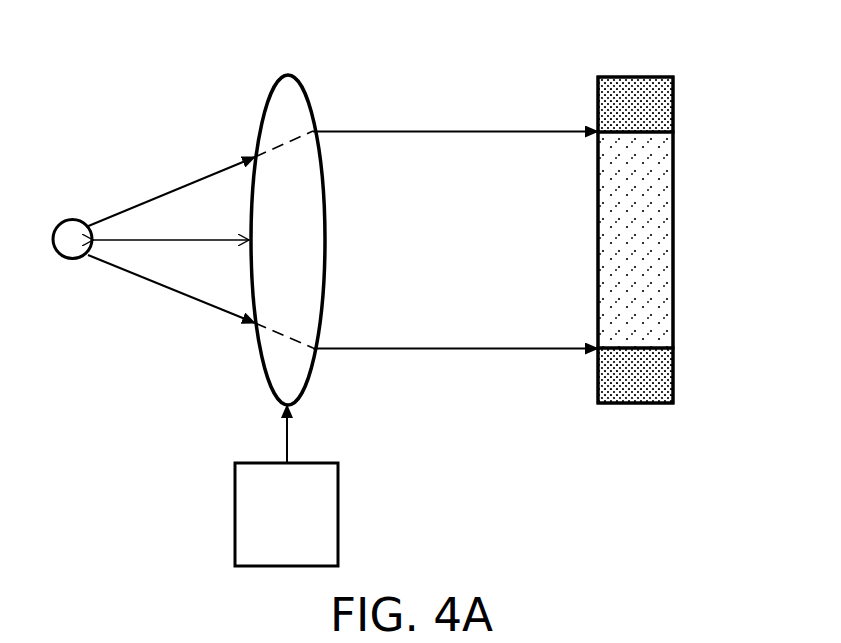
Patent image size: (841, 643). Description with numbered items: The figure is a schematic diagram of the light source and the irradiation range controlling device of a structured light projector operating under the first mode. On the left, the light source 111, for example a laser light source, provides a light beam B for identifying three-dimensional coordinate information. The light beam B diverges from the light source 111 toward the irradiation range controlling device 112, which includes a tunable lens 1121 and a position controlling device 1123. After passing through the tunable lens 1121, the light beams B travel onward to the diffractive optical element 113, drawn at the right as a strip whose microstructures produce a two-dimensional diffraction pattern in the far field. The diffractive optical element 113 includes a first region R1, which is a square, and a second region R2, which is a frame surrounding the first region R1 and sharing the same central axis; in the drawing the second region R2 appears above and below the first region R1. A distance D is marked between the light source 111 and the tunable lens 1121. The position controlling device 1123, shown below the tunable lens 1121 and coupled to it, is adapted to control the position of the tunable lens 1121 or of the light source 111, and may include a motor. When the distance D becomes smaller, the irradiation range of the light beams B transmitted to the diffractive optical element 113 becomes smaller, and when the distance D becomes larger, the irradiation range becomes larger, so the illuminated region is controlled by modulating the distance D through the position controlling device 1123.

The light source 111 is at (68, 224).
The irradiation range controlling device 112 is at (203, 320).
The tunable lens 1121 is at (264, 369).
The position controlling device 1123 is at (247, 493).
The diffractive optical element 113 is at (669, 204).
The light beam B is at (160, 192).
The distance D is at (171, 223).
The first region R1 is at (652, 252).
The second region R2 is at (652, 109).